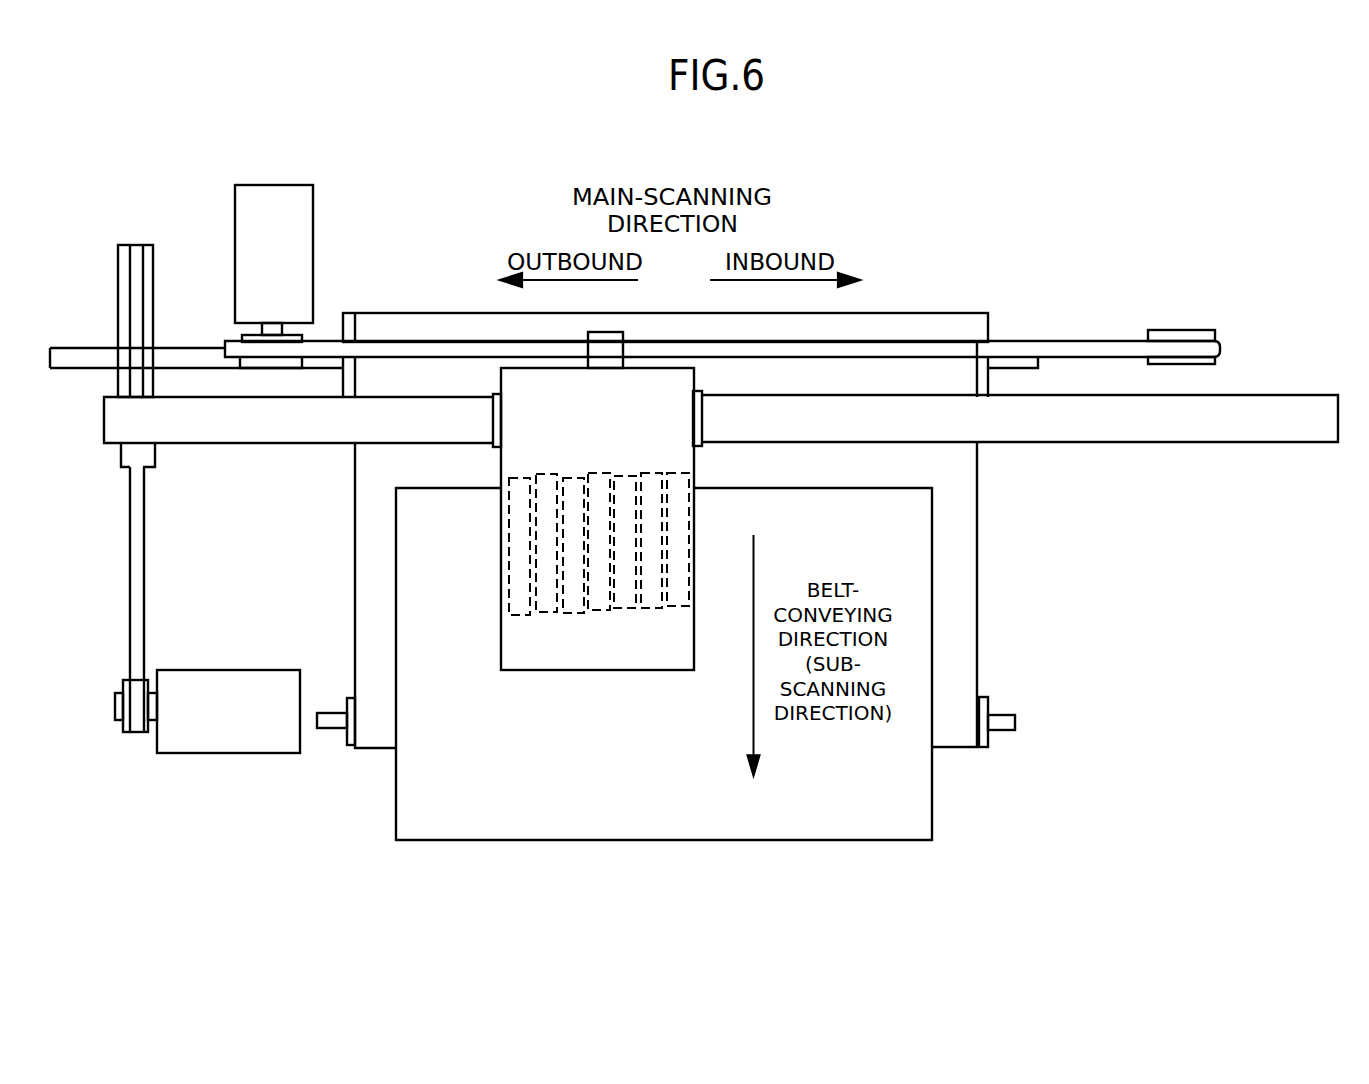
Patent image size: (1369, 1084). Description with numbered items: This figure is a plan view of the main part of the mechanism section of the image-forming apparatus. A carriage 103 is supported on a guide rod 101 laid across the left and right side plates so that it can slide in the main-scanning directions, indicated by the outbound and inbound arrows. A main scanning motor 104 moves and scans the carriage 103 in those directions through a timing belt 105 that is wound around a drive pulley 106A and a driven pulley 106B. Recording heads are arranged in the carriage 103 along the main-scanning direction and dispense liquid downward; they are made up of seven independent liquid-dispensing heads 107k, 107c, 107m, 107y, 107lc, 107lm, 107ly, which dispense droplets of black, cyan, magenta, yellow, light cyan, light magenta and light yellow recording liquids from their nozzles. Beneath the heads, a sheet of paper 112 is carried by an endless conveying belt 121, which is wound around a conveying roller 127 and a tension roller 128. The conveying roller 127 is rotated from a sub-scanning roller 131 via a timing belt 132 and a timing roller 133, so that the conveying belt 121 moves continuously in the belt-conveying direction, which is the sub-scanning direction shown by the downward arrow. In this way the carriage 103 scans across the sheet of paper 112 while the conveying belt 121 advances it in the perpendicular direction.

The guide rod 101 is at (1068, 425).
The carriage 103 is at (501, 528).
The main scanning motor 104 is at (275, 203).
The timing belt 105 is at (947, 352).
The drive pulley 106A is at (242, 335).
The driven pulley 106B is at (1217, 335).
The liquid-dispensing head 107k is at (519, 615).
The liquid-dispensing head 107c is at (547, 615).
The liquid-dispensing head 107m is at (575, 615).
The liquid-dispensing head 107y is at (598, 615).
The liquid-dispensing head 107lc is at (628, 615).
The liquid-dispensing head 107lm is at (657, 615).
The liquid-dispensing head 107ly is at (680, 615).
The sheet of paper 112 is at (850, 794).
The conveying belt 121 is at (422, 332).
The conveying roller 127 is at (347, 330).
The tension roller 128 is at (353, 743).
The sub-scanning roller 131 is at (192, 730).
The timing belt 132 is at (130, 572).
The timing roller 133 is at (152, 243).